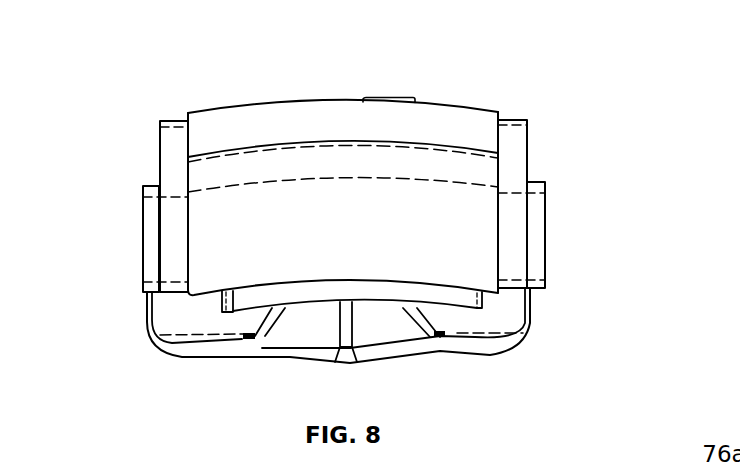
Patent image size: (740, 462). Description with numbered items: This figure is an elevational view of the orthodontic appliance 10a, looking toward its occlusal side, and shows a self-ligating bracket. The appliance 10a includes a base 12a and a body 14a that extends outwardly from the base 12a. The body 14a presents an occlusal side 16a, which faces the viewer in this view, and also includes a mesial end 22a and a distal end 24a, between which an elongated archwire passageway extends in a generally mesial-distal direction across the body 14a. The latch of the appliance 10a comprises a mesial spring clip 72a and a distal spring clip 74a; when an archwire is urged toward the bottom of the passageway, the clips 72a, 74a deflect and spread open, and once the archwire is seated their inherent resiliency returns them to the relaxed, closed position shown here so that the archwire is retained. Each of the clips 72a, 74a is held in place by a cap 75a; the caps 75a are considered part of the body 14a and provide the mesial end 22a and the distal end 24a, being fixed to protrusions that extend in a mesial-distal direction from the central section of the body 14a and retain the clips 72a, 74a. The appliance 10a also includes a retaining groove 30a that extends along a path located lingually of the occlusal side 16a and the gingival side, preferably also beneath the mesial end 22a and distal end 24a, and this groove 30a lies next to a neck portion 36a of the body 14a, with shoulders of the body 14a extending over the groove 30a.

The orthodontic appliance 10a is at (503, 93).
The base 12a is at (493, 323).
The body 14a is at (213, 262).
The occlusal side 16a is at (237, 262).
The mesial end 22a is at (538, 240).
The distal end 24a is at (150, 235).
The retaining groove 30a is at (487, 304).
The neck portion 36a is at (453, 300).
The mesial spring clip 72a is at (518, 153).
The distal spring clip 74a is at (175, 150).
The cap 75a is at (150, 263).